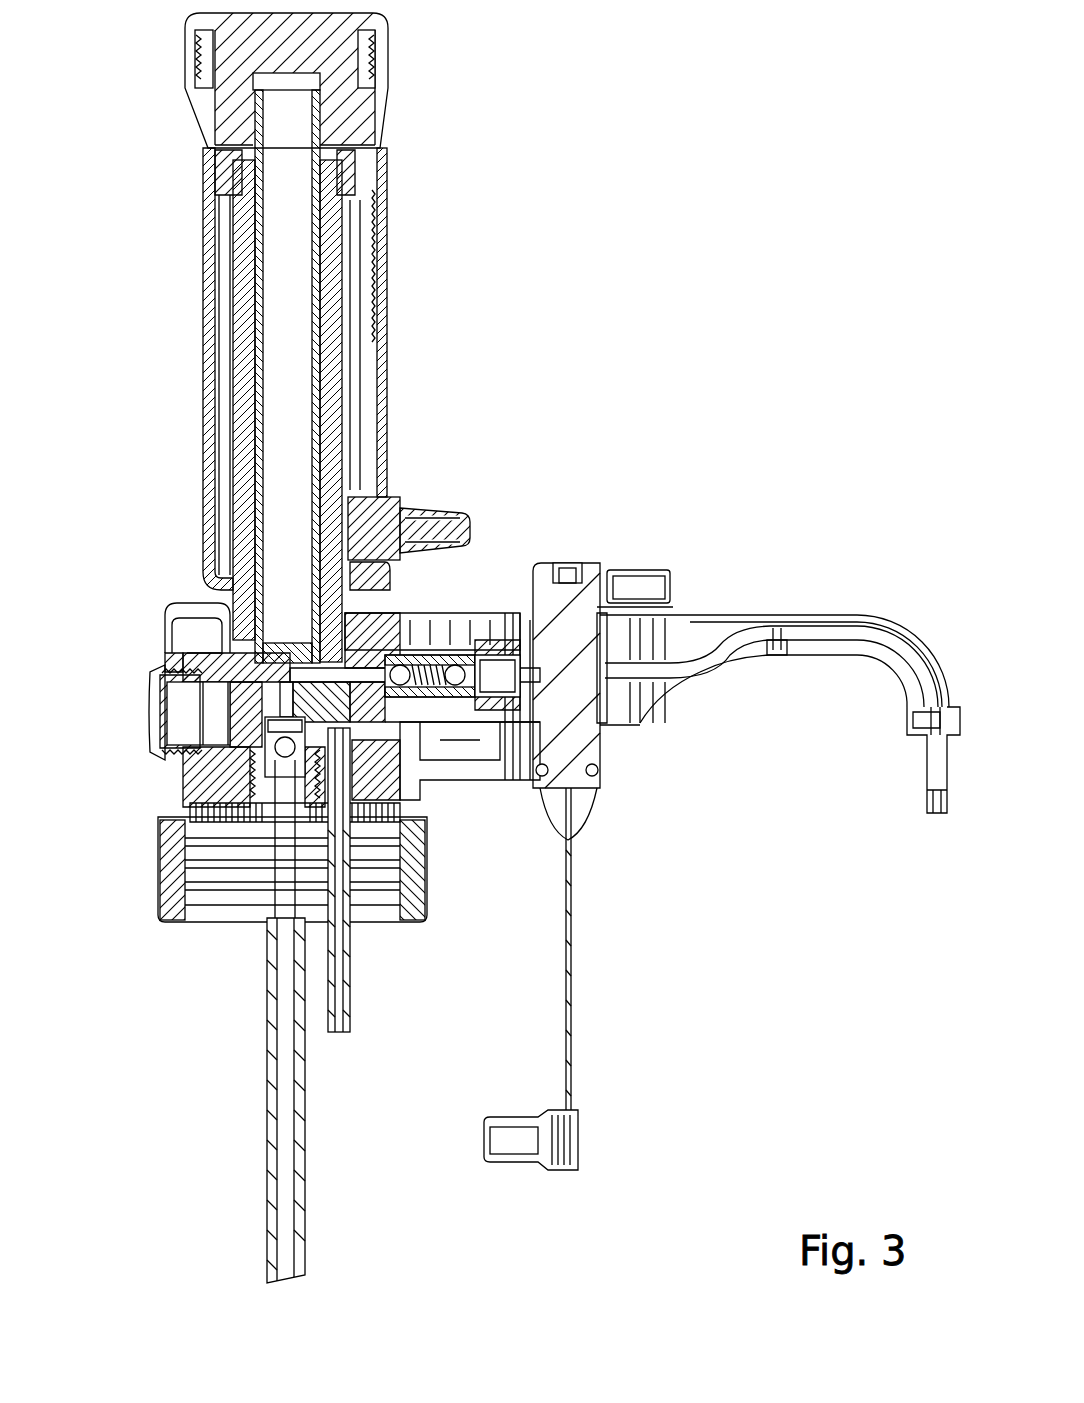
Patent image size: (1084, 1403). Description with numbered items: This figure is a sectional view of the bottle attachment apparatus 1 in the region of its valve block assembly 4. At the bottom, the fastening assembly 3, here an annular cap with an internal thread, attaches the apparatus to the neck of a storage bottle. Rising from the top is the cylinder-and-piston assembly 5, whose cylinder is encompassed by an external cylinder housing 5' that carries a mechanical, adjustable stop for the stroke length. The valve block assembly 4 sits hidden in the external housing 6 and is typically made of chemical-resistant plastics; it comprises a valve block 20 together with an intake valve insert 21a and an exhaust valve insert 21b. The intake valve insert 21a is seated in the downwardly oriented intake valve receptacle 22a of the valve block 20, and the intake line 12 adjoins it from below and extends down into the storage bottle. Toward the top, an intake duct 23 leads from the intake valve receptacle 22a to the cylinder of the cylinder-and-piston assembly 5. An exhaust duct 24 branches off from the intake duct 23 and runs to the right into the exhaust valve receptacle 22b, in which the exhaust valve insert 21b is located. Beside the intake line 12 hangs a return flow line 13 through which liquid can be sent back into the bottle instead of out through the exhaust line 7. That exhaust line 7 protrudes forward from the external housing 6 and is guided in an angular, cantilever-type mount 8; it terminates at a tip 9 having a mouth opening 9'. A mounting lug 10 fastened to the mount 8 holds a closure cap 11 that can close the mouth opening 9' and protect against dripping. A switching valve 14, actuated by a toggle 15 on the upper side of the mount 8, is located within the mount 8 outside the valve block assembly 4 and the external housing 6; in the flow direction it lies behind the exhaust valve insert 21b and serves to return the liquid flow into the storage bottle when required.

The bottle attachment apparatus 1 is at (590, 194).
The fastening assembly 3 is at (160, 870).
The valve block assembly 4 is at (178, 640).
The cylinder-and-piston assembly 5 is at (243, 98).
The cylinder housing 5' is at (242, 369).
The external housing 6 is at (180, 606).
The exhaust line 7 is at (835, 615).
The cantilever-type mount 8 is at (705, 615).
The tip 9 is at (908, 772).
The mouth opening 9' is at (936, 842).
The mounting lug 10 is at (571, 980).
The closure cap 11 is at (516, 1152).
The intake line 12 is at (267, 1077).
The return flow line 13 is at (330, 975).
The switching valve 14 is at (597, 742).
The toggle 15 is at (617, 562).
The valve block 20 is at (297, 698).
The intake valve insert 21a is at (197, 780).
The exhaust valve insert 21b is at (458, 632).
The intake valve receptacle 22a is at (193, 797).
The exhaust valve receptacle 22b is at (450, 645).
The intake duct 23 is at (243, 682).
The exhaust duct 24 is at (397, 635).